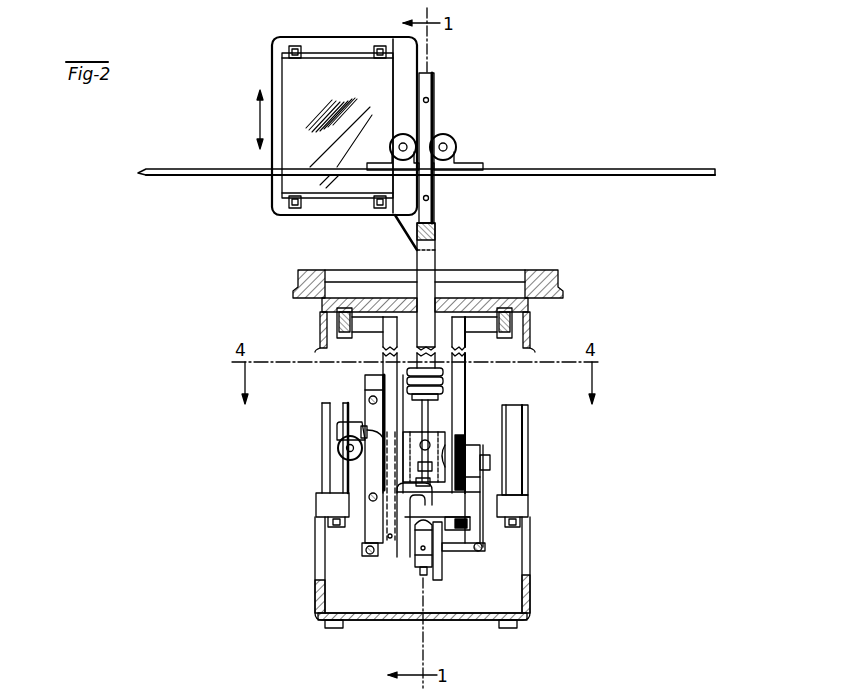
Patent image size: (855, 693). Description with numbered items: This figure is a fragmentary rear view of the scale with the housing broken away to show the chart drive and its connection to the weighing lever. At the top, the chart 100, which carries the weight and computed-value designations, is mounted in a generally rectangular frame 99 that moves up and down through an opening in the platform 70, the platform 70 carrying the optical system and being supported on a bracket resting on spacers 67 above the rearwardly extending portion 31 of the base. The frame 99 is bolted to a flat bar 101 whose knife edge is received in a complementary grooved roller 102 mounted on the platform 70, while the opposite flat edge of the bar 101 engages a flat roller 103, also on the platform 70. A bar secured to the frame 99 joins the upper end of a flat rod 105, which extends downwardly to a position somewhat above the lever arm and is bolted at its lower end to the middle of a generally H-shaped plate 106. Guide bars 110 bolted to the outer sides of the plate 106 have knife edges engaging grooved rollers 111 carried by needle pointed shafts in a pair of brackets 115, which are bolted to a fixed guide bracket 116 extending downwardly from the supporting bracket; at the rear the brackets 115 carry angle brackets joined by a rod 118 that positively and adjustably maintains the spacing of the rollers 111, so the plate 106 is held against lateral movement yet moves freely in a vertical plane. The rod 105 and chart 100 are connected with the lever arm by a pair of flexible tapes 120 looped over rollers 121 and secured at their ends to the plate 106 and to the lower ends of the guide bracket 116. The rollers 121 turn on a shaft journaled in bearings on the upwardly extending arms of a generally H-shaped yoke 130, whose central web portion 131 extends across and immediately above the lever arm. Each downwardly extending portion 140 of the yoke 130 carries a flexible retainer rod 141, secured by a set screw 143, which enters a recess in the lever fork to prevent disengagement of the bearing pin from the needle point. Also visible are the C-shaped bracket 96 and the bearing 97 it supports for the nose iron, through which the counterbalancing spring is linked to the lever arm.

The rearwardly extending portion 31 is at (528, 596).
The spacers 67 is at (517, 426).
The platform 70 is at (197, 169).
The C-shaped bracket 96 is at (402, 558).
The bearing 97 is at (436, 578).
The frame 99 is at (326, 47).
The chart 100 is at (287, 73).
The flat bar 101 is at (435, 80).
The grooved roller 102 is at (413, 138).
The flat roller 103 is at (456, 147).
The flat rod 105 is at (432, 260).
The H-shaped plate 106 is at (440, 432).
The guide bars 110 is at (366, 380).
The grooved rollers 111 is at (339, 450).
The brackets 115 is at (345, 432).
The guide bracket 116 is at (383, 347).
The rod 118 is at (372, 428).
The flexible tapes 120 is at (362, 538).
The rollers 121 is at (467, 440).
The H-shaped yoke 130 is at (478, 492).
The central web portion 131 is at (437, 505).
The downwardly extending portions 140 is at (486, 557).
The flexible retainer rod 141 is at (362, 541).
The set screw 143 is at (368, 557).